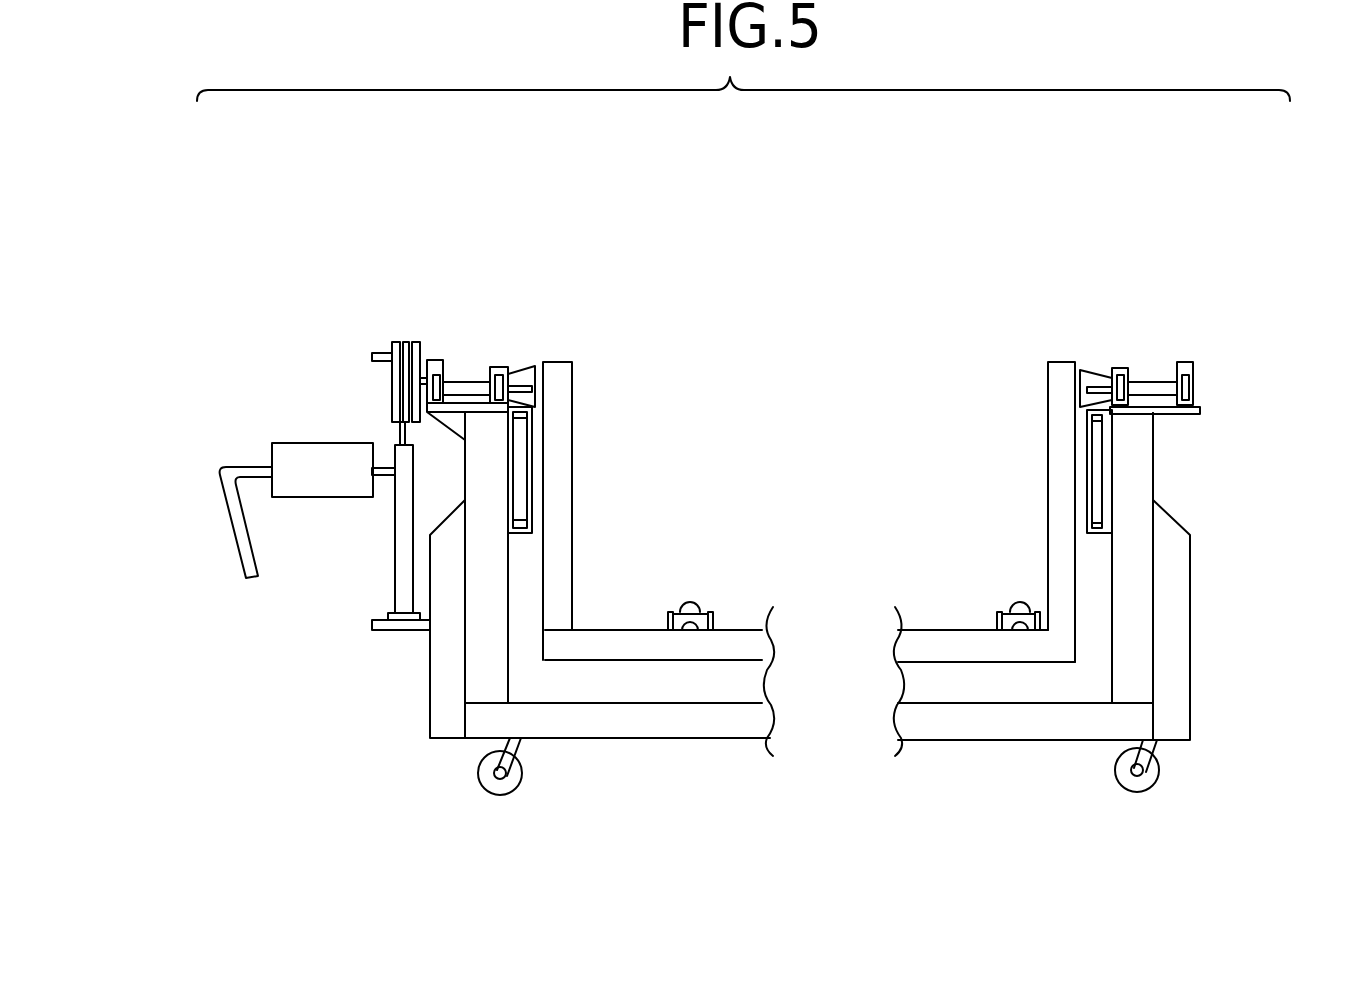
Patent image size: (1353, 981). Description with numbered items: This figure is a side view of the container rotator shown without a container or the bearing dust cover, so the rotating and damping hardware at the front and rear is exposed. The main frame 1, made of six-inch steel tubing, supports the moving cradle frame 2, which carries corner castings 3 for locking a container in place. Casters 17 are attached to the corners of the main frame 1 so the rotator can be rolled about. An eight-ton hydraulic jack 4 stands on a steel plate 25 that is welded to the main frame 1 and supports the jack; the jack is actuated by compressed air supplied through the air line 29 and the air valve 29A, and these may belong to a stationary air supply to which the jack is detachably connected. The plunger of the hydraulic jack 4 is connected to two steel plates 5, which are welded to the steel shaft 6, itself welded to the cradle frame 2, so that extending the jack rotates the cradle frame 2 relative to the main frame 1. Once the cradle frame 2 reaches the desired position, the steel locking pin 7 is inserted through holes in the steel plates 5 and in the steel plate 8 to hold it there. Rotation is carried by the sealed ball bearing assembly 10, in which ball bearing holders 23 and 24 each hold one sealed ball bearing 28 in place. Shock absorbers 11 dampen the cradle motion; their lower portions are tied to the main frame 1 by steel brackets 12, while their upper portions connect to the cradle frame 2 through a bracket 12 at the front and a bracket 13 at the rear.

The main frame 1 is at (702, 745).
The cradle frame 2 is at (747, 630).
The corner casting 3 is at (683, 600).
The hydraulic jack 4 is at (395, 520).
The steel plates 5 is at (392, 342).
The steel shaft 6 is at (489, 366).
The steel locking pin 7 is at (373, 362).
The steel plate 8 is at (417, 342).
The sealed ball bearing assembly 10 is at (565, 207).
The shock absorbers 11 is at (543, 468).
The steel brackets 12 is at (532, 533).
The steel brackets 13 is at (543, 413).
The casters 17 is at (513, 795).
The ball bearing holder 23 is at (437, 360).
The ball bearing holder 24 is at (503, 380).
The steel plate 25 is at (400, 632).
The sealed ball bearing 28 is at (448, 372).
The air line 29 is at (220, 490).
The air valve 29A is at (350, 497).